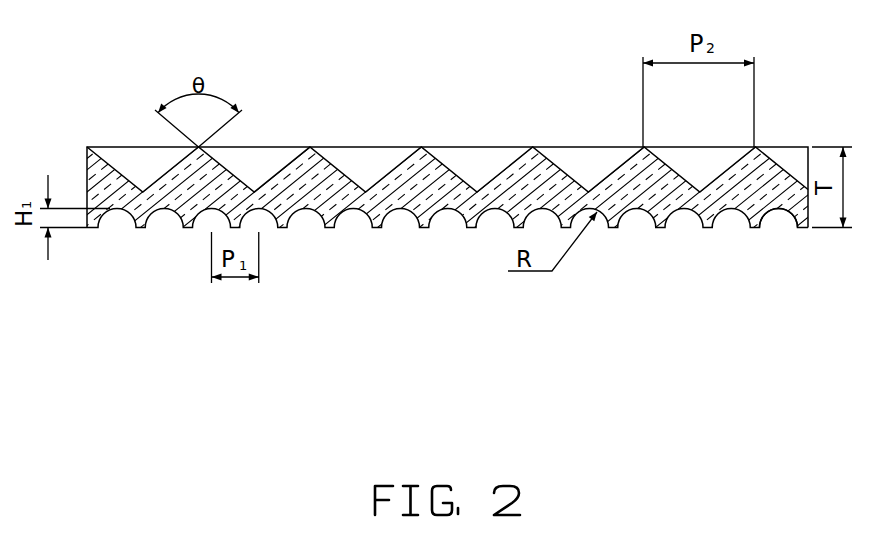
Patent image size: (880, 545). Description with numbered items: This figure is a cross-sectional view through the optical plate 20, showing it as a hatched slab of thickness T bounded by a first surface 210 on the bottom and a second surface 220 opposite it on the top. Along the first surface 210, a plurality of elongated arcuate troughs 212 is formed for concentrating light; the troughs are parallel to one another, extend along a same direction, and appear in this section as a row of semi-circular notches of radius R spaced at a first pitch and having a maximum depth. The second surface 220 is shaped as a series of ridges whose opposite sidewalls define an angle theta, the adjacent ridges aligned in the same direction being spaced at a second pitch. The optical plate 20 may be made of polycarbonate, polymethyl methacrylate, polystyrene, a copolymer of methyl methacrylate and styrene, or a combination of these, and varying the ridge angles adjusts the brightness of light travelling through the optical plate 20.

The optical plate 20 is at (440, 174).
The second surface 220 is at (365, 145).
The first surface 210 is at (662, 232).
The elongated arcuate troughs 212 is at (775, 222).